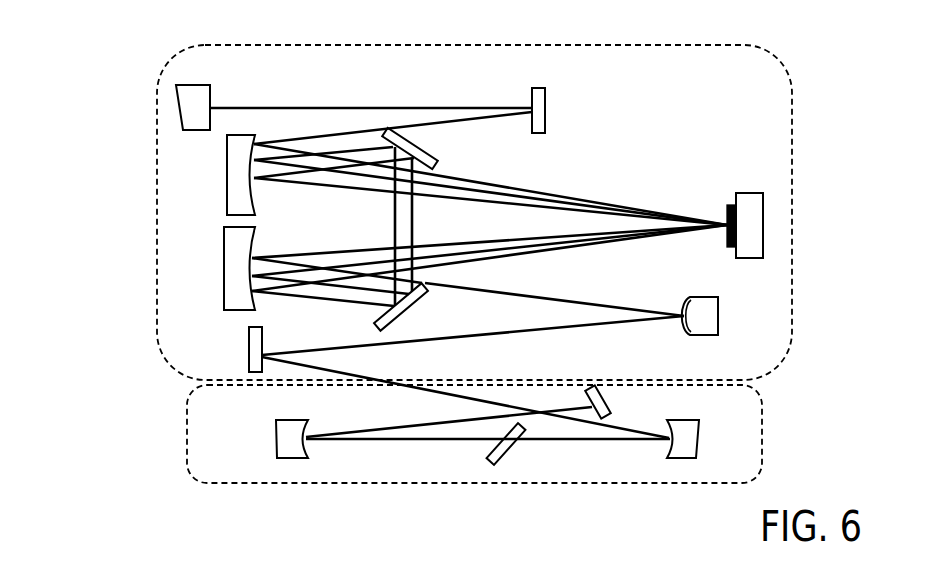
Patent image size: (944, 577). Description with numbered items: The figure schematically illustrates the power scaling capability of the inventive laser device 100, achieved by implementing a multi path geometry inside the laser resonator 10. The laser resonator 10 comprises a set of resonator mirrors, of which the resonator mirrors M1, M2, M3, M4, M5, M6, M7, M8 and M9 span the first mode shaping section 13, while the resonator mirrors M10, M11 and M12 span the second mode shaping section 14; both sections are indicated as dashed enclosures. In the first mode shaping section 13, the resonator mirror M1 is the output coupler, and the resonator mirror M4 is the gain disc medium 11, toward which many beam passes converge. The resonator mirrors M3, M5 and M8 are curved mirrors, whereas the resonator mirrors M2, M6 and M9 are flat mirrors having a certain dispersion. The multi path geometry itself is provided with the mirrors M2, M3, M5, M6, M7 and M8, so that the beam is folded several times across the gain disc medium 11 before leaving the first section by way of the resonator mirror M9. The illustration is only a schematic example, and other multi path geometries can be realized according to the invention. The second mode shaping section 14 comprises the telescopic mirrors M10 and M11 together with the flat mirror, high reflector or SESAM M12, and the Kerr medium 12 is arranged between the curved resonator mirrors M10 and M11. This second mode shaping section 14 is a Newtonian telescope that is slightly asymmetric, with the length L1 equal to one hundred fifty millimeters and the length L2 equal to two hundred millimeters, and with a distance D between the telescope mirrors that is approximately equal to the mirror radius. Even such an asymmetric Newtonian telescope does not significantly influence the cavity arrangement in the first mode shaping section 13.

The laser device 100 is at (140, 70).
The laser resonator 10 is at (346, 228).
The gain disc medium 11 is at (737, 227).
The Kerr medium 12 is at (511, 449).
The first mode shaping section 13 is at (786, 251).
The second mode shaping section 14 is at (760, 475).
The distance between the mirrors D is at (438, 440).
The telescope length L1 is at (453, 415).
The telescope length L2 is at (505, 405).
The resonator mirror M1 is at (193, 93).
The resonator mirror M2 is at (560, 110).
The resonator mirror M3 is at (218, 175).
The resonator mirror M4 is at (743, 206).
The resonator mirror M5 is at (218, 268).
The resonator mirror M6 is at (413, 307).
The resonator mirror M7 is at (423, 148).
The resonator mirror M8 is at (723, 316).
The resonator mirror M9 is at (231, 349).
The telescopic mirror M10 is at (709, 439).
The telescopic mirror M11 is at (266, 439).
The flat mirror, high reflector or SESAM M12 is at (619, 401).